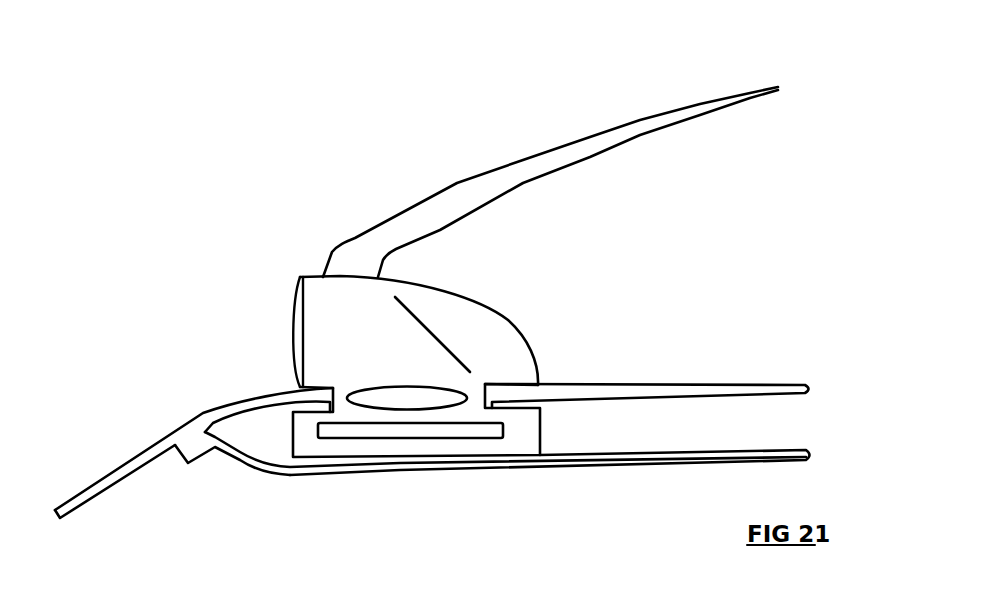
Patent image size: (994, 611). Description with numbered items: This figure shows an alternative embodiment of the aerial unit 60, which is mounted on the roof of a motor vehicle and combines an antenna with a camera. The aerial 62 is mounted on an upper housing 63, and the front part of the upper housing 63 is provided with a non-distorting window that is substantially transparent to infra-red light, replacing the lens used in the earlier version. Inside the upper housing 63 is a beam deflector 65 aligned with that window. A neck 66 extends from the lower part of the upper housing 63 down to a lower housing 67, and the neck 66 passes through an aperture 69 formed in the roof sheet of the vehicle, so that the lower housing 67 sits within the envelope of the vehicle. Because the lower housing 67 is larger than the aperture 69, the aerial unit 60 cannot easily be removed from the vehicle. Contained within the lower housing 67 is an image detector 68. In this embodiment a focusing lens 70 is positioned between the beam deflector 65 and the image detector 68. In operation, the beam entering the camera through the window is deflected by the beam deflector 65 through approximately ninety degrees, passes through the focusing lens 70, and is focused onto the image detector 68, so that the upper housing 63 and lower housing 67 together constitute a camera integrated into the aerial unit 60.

The aerial unit 60 is at (448, 204).
The aerial 62 is at (523, 160).
The upper housing 63 is at (369, 310).
The beam deflector 65 is at (440, 338).
The neck 66 is at (300, 390).
The lower housing 67 is at (292, 432).
The image detector 68 is at (422, 438).
The aperture 69 is at (548, 385).
The focusing lens 70 is at (453, 407).